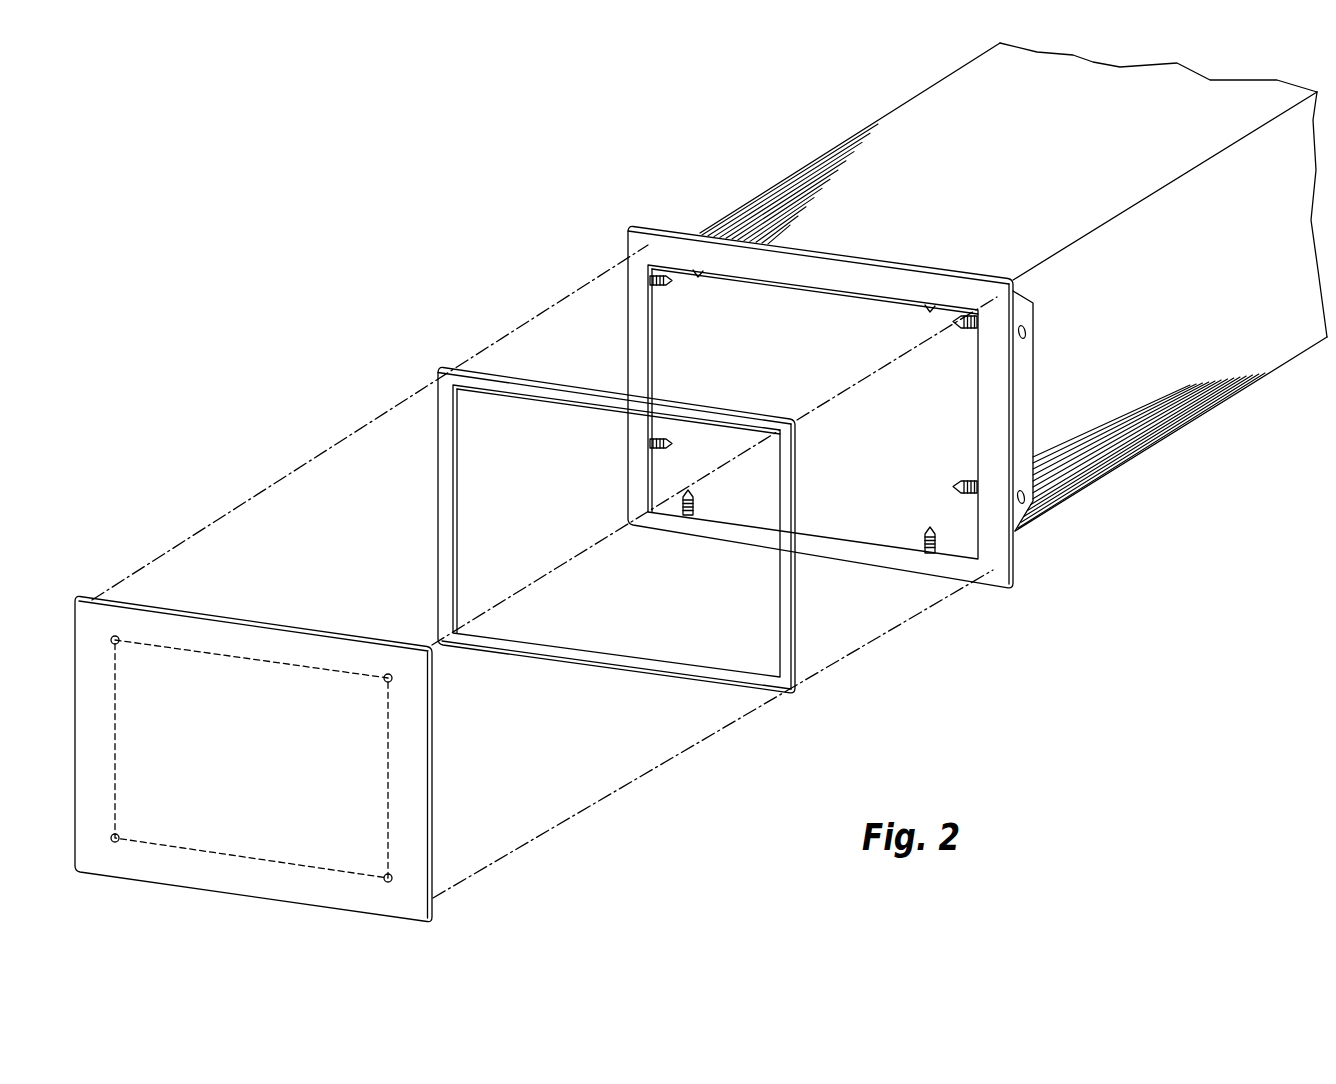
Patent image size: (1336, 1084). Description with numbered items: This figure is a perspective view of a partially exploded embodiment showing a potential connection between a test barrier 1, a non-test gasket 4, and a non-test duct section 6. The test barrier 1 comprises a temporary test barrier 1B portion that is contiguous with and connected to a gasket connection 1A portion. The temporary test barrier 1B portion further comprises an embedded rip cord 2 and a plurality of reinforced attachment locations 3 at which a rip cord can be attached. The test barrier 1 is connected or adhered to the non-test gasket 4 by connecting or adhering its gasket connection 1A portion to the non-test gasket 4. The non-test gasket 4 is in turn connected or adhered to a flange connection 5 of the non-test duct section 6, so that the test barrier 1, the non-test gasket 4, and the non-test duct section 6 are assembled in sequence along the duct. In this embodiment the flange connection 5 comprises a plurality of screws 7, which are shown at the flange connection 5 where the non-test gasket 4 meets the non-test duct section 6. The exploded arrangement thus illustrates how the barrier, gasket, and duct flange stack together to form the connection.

The test barrier 1 is at (293, 727).
The gasket connection portion 1A is at (210, 630).
The temporary test barrier portion 1B is at (172, 825).
The embedded rip cord 2 is at (305, 867).
The reinforced attachment locations 3 is at (392, 879).
The non-test gasket 4 is at (797, 674).
The flange connection 5 is at (667, 245).
The non-test duct section 6 is at (1177, 415).
The screws 7 is at (955, 495).